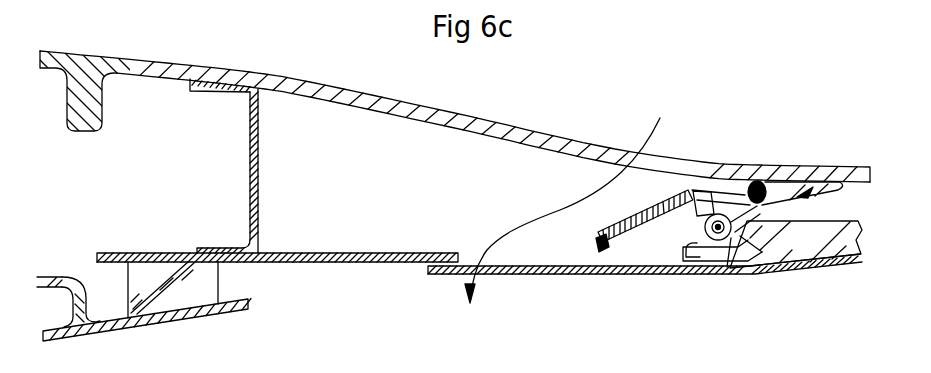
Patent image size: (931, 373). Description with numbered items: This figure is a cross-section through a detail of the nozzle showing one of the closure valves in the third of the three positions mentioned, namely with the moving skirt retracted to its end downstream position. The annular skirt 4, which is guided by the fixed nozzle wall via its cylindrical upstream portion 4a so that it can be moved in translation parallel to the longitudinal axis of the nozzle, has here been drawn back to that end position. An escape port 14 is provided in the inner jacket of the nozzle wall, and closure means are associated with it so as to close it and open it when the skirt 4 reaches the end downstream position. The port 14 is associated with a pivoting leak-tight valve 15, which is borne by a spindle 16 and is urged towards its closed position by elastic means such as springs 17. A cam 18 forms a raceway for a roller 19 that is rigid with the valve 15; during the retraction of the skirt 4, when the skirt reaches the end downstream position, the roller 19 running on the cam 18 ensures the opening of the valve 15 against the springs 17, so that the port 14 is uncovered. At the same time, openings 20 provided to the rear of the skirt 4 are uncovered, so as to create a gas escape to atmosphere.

The annular skirt 4 is at (824, 267).
The cylindrical upstream portion 4a is at (597, 274).
The escape port 14 is at (606, 150).
The pivoting leak-tight valve 15 is at (622, 227).
The spindle 16 is at (760, 183).
The springs 17 is at (755, 262).
The cam 18 is at (700, 260).
The roller 19 is at (695, 248).
The openings 20 is at (463, 278).